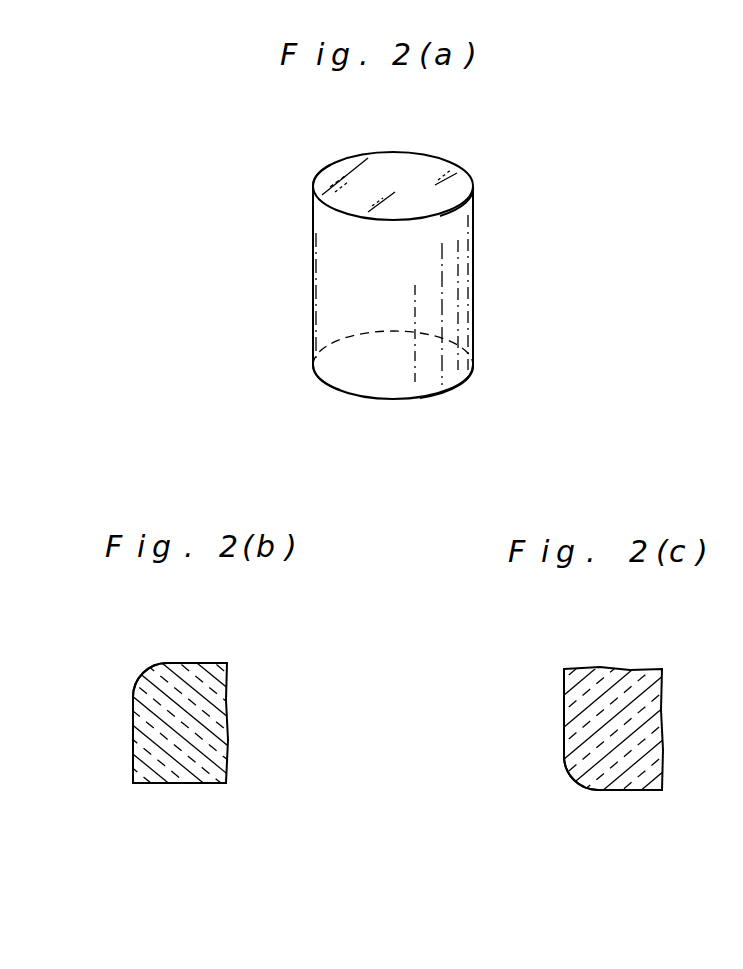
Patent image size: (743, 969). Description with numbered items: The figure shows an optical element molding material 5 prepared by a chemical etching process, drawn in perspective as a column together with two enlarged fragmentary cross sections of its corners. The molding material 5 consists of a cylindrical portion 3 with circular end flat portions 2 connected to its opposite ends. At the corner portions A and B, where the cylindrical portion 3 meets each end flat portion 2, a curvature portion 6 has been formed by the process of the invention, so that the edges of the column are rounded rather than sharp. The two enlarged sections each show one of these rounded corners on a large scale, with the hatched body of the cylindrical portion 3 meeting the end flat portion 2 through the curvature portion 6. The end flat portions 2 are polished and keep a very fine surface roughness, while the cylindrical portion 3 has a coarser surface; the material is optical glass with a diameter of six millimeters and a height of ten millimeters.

In FIG. 2A, the end flat portion 2 is at (425, 177).
In FIG. 2B, the end flat portion 2 is at (196, 662).
In FIG. 2C, the end flat portion 2 is at (635, 790).
In FIG. 2A, the cylindrical portion 3 is at (472, 283).
In FIG. 2B, the cylindrical portion 3 is at (133, 742).
In FIG. 2C, the cylindrical portion 3 is at (564, 725).
In FIG. 2A, the optical element molding material 5 is at (323, 288).
In FIG. 2A, the curvature portion 6 is at (469, 172).
In FIG. 2B, the curvature portion 6 is at (137, 680).
In FIG. 2C, the curvature portion 6 is at (572, 778).
In FIG. 2A, the corner portion A is at (313, 178).
In FIG. 2A, the corner portion B is at (311, 367).